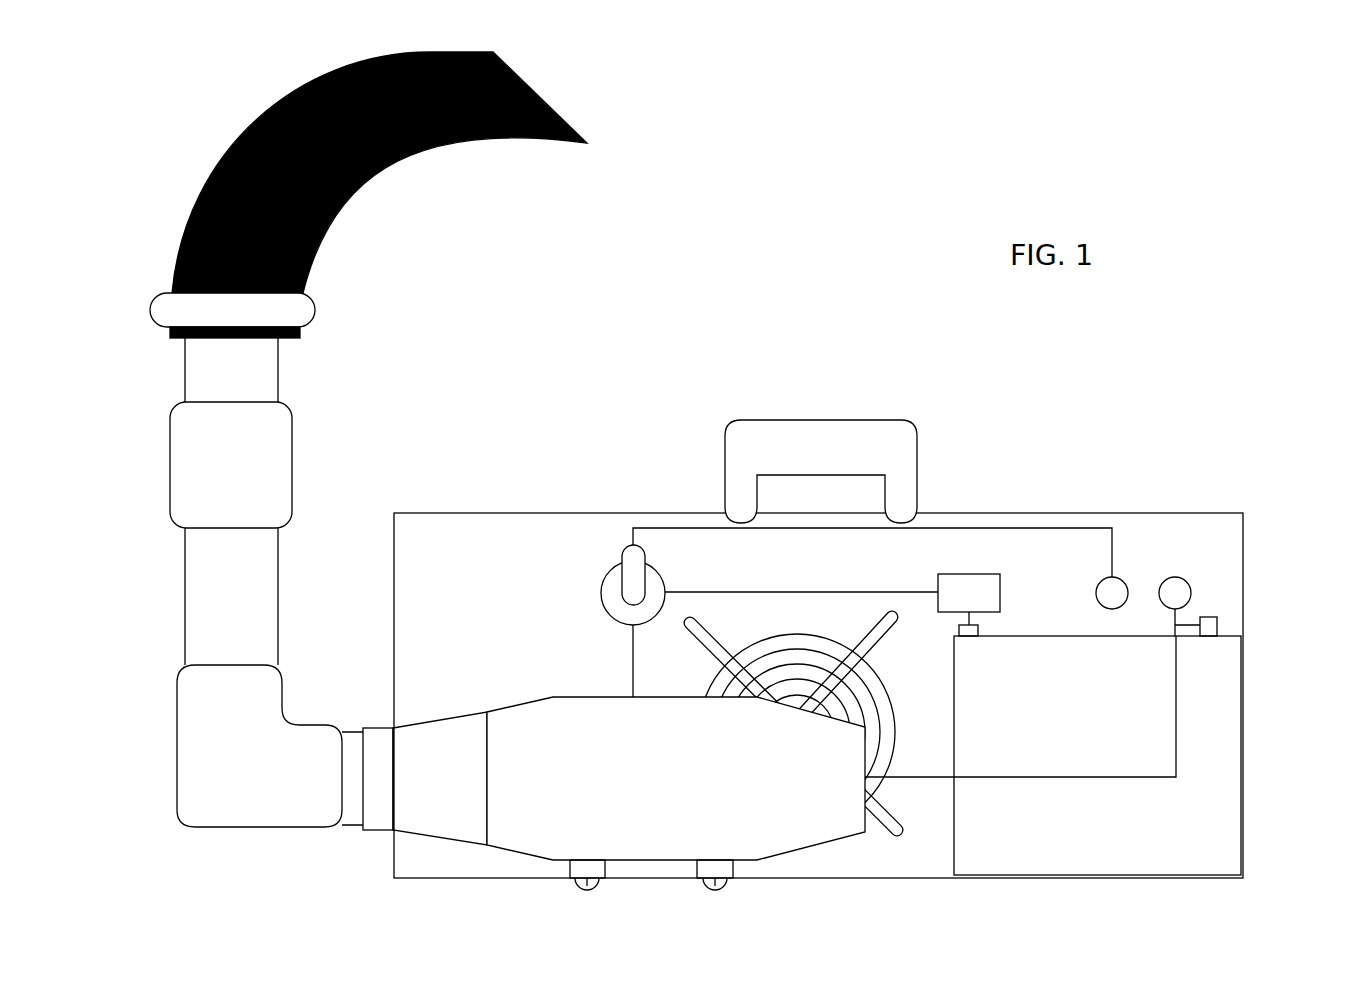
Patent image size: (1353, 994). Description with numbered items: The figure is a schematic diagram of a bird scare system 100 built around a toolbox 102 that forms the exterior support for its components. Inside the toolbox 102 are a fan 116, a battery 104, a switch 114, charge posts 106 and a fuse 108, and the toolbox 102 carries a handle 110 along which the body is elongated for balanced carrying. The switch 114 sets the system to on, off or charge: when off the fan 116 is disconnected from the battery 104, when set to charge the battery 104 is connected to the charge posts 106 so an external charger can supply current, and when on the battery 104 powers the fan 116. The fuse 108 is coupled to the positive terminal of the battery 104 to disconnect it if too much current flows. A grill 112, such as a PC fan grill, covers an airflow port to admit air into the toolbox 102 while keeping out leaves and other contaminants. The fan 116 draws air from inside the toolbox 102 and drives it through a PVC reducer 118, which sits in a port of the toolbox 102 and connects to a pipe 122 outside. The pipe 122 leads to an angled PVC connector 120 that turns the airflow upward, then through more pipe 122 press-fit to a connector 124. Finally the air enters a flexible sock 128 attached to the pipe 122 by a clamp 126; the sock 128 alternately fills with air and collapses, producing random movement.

The bird scare system 100 is at (1258, 134).
The toolbox 102 is at (1243, 540).
The battery 104 is at (1213, 765).
The charge posts 106 is at (1191, 593).
The fuse 108 is at (1000, 610).
The handle 110 is at (917, 456).
The grill 112 is at (873, 655).
The switch 114 is at (660, 572).
The fan 116 is at (742, 756).
The PVC reducer 118 is at (406, 811).
The angled PVC connector 120 is at (245, 793).
The pipe 122 is at (215, 376).
The connector 124 is at (216, 522).
The clamp 126 is at (297, 310).
The flexible sock 128 is at (427, 147).